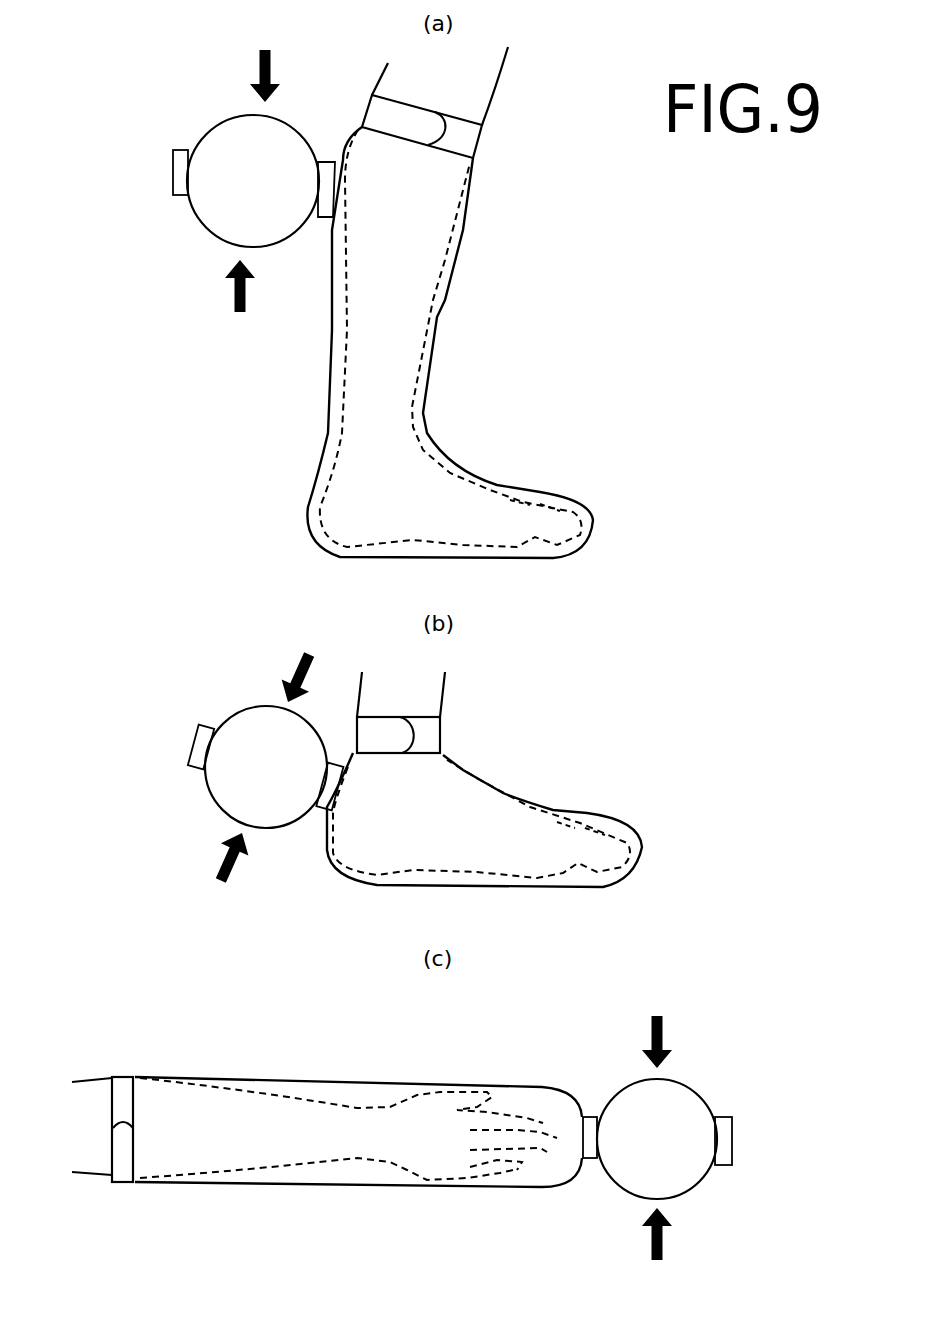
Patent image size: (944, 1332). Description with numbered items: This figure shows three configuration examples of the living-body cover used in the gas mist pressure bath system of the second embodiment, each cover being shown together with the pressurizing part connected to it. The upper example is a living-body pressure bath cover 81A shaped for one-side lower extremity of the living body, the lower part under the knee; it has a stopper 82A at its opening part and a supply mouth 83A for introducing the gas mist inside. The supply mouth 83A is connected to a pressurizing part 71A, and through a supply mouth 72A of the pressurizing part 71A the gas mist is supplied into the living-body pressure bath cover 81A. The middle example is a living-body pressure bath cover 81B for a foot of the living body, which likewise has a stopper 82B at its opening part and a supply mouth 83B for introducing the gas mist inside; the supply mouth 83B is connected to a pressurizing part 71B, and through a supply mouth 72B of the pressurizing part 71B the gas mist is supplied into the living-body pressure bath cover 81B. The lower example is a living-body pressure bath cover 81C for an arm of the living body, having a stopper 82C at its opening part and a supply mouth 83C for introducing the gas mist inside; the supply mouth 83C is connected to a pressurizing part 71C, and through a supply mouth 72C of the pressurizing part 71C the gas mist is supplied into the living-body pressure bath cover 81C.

The pressurizing part 71A is at (233, 115).
The supply mouth of pressurizing part 72A is at (180, 197).
The supply mouth 83A is at (330, 162).
The stopper 82A is at (477, 138).
The living-body pressure bath cover 81A is at (540, 108).
The pressurizing part 71B is at (258, 707).
The supply mouth of pressurizing part 72B is at (192, 767).
The supply mouth 83B is at (340, 762).
The stopper 82B is at (442, 727).
The living-body pressure bath cover 81B is at (572, 705).
The pressurizing part 71C is at (678, 1080).
The supply mouth of pressurizing part 72C is at (720, 1117).
The supply mouth 83C is at (588, 1115).
The stopper 82C is at (122, 1077).
The living-body pressure bath cover 81C is at (470, 1045).